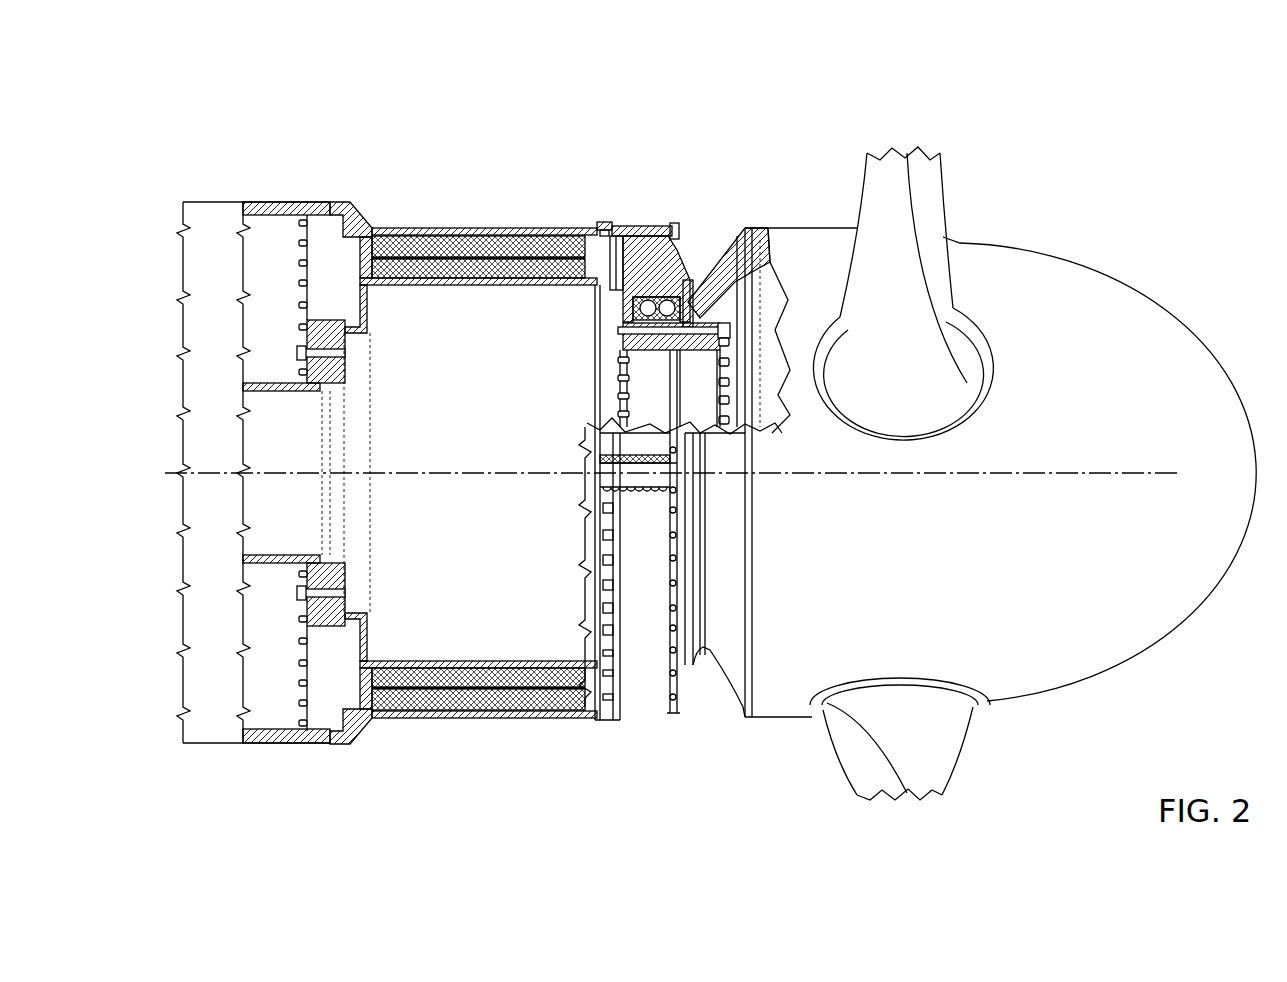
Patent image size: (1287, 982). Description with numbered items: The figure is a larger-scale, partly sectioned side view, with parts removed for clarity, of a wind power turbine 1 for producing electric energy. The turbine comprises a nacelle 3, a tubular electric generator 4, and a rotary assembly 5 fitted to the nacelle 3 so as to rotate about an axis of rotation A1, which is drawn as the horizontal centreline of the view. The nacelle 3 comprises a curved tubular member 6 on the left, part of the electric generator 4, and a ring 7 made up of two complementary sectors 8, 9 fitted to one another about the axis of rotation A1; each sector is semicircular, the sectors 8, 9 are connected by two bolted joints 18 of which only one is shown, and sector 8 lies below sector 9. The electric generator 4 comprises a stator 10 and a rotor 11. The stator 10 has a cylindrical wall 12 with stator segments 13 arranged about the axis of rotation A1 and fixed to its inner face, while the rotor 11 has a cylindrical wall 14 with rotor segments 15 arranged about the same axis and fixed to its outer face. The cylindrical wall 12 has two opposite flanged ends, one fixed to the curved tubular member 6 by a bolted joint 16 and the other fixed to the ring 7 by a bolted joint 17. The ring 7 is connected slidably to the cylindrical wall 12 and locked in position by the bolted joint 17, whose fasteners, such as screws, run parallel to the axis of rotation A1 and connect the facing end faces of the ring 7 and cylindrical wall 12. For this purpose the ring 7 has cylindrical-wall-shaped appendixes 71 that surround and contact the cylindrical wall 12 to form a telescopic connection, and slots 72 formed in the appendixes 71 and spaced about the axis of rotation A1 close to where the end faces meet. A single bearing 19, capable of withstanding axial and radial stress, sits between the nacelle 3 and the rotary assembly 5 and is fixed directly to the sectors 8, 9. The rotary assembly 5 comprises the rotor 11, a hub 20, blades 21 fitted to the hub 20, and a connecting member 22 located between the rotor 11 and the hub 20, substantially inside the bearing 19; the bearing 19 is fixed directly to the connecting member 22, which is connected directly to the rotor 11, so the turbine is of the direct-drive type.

The wind power turbine 1 is at (1130, 212).
The nacelle 3 is at (290, 143).
The electric generator 4 is at (450, 737).
The rotary assembly 5 is at (1205, 303).
The curved tubular member 6 is at (280, 742).
The ring 7 is at (640, 748).
The sector 8 is at (664, 708).
The sector 9 is at (650, 445).
The stator 10 is at (586, 200).
The rotor 11 is at (493, 298).
The cylindrical wall 12 is at (470, 228).
The stator segments 13 is at (538, 240).
The cylindrical wall 14 is at (568, 282).
The rotor segments 15 is at (460, 266).
The bolted joint 16 is at (293, 303).
The bolted joint 17 is at (685, 220).
The bolted joints 18 is at (638, 497).
The bearing 19 is at (688, 313).
The hub 20 is at (1082, 650).
The blades 21 is at (922, 210).
The connecting member 22 is at (682, 365).
The appendixes 71 is at (603, 718).
The slots 72 is at (612, 220).
The axis of rotation A1 is at (998, 473).